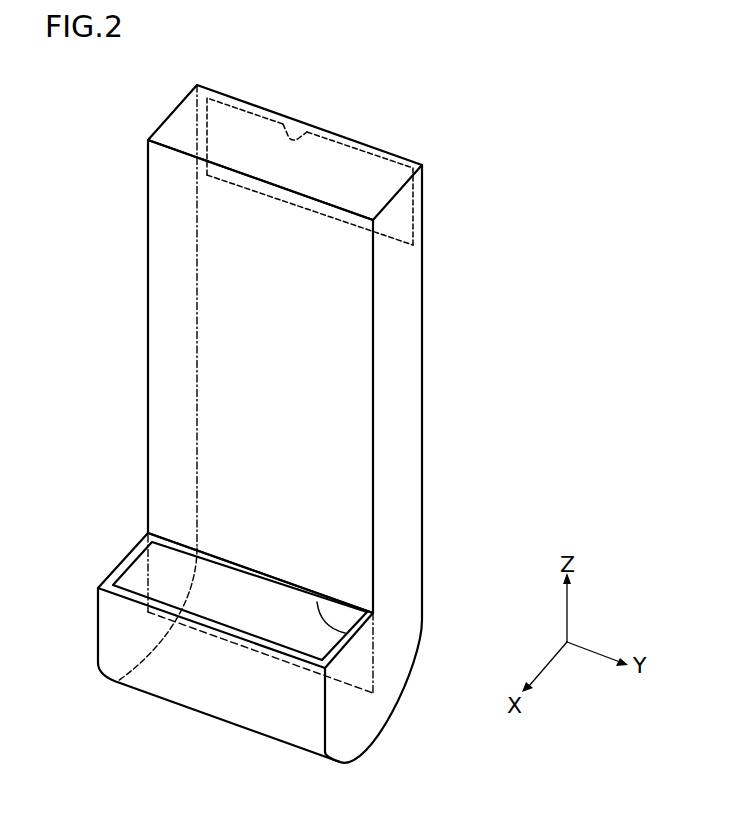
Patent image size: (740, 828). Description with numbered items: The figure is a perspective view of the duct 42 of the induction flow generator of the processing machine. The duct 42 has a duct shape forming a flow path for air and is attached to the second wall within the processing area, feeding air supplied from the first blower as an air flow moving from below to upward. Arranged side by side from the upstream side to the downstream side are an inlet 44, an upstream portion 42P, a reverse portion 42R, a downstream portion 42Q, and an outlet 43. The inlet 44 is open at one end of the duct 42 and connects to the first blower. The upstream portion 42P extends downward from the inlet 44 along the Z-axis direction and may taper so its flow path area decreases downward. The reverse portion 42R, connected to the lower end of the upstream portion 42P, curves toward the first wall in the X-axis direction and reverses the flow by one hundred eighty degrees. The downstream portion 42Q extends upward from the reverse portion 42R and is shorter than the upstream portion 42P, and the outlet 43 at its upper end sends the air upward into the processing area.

The duct 42 is at (282, 410).
The upstream portion 42P is at (247, 397).
The downstream portion 42Q is at (289, 651).
The reverse portion 42R is at (380, 708).
The outlet 43 is at (357, 636).
The inlet 44 is at (307, 129).